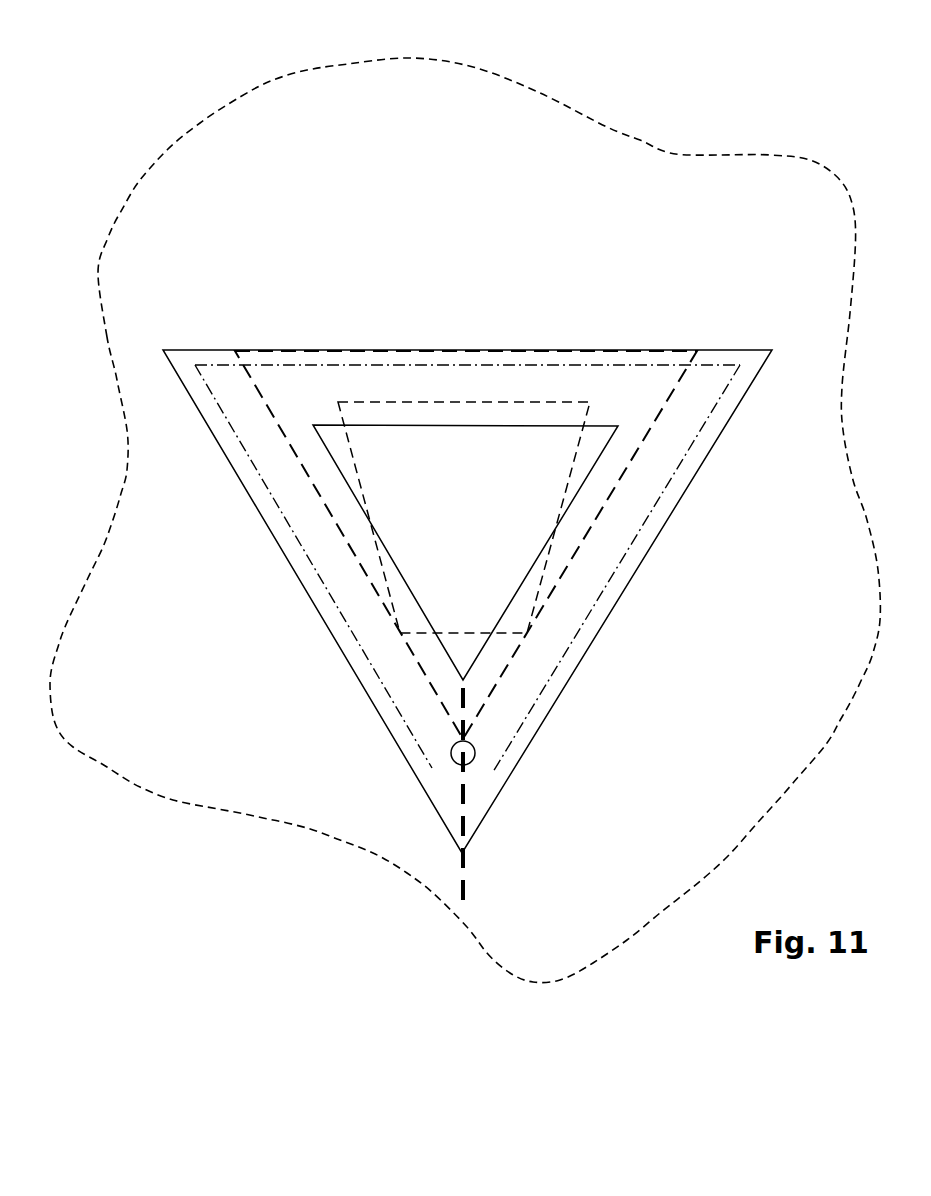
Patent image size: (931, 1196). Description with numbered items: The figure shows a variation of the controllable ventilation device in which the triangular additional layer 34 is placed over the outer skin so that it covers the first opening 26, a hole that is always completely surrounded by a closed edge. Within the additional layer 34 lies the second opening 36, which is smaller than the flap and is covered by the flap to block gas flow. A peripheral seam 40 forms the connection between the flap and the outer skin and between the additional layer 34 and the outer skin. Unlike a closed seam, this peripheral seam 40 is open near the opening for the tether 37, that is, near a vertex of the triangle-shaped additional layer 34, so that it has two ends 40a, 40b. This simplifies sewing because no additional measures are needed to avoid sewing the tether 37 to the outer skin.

The first opening 26 is at (533, 473).
The additional section/additional layer 34 is at (182, 355).
The second opening 36 is at (333, 440).
The tether 37 is at (458, 877).
The peripheral seam 40 is at (357, 638).
The end of peripheral seam 40a is at (432, 768).
The end of peripheral seam 40b is at (492, 772).